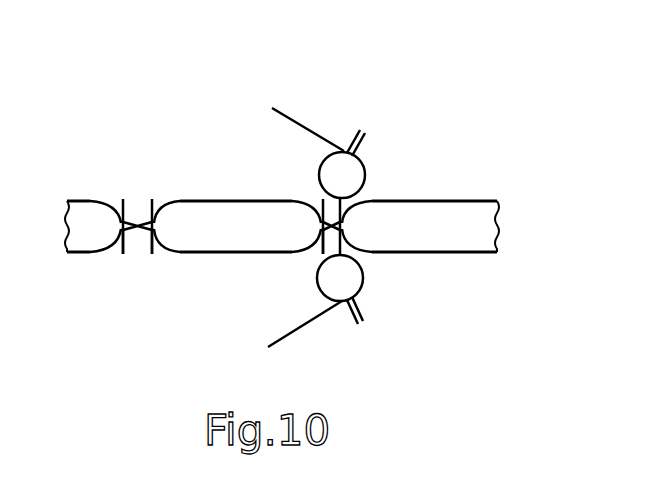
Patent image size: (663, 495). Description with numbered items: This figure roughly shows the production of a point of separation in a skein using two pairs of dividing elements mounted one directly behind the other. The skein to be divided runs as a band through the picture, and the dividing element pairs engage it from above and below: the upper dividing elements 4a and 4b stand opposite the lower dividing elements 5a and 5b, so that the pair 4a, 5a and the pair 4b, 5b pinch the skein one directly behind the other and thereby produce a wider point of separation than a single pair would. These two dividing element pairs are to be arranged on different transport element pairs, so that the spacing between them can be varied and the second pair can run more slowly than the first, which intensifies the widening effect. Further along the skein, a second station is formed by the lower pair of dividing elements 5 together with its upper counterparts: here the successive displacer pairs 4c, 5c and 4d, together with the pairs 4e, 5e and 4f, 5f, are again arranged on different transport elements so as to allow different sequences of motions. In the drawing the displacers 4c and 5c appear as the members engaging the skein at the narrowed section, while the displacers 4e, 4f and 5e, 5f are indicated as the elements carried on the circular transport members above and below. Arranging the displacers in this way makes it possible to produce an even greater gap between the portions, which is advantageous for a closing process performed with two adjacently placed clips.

The dividing element 4a is at (121, 199).
The dividing element 4b is at (155, 199).
The displacer 4c is at (321, 198).
The displacer 4d is at (360, 198).
The displacer 4e is at (352, 133).
The displacer 4f is at (367, 136).
The pair of dividing elements 5 is at (359, 257).
The dividing element 5a is at (121, 256).
The dividing element 5b is at (155, 256).
The displacer 5c is at (318, 257).
The displacer 5e is at (349, 327).
The displacer 5f is at (362, 322).